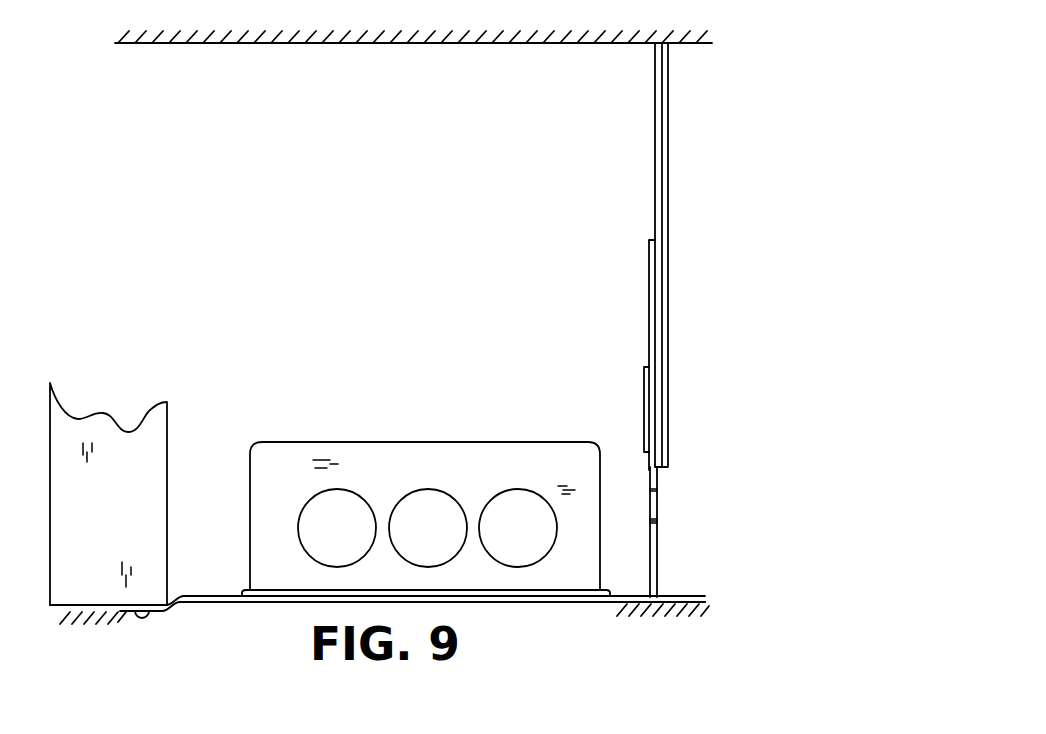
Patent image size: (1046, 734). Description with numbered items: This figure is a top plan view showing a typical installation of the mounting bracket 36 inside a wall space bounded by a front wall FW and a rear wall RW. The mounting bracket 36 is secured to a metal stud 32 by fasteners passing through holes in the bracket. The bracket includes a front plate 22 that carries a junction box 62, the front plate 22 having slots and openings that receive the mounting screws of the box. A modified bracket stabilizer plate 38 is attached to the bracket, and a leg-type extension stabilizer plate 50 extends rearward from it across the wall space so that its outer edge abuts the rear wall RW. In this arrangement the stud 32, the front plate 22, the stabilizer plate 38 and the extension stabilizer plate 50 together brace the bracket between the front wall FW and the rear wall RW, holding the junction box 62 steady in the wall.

The rear wall RW is at (435, 43).
The front wall FW is at (682, 614).
The leg-type extension stabilizer plate 50 is at (672, 168).
The modified bracket stabilizer plate 38 is at (658, 530).
The junction box 62 is at (447, 447).
The mounting bracket 36 is at (246, 608).
The front plate 22 is at (622, 603).
The stud 32 is at (158, 530).